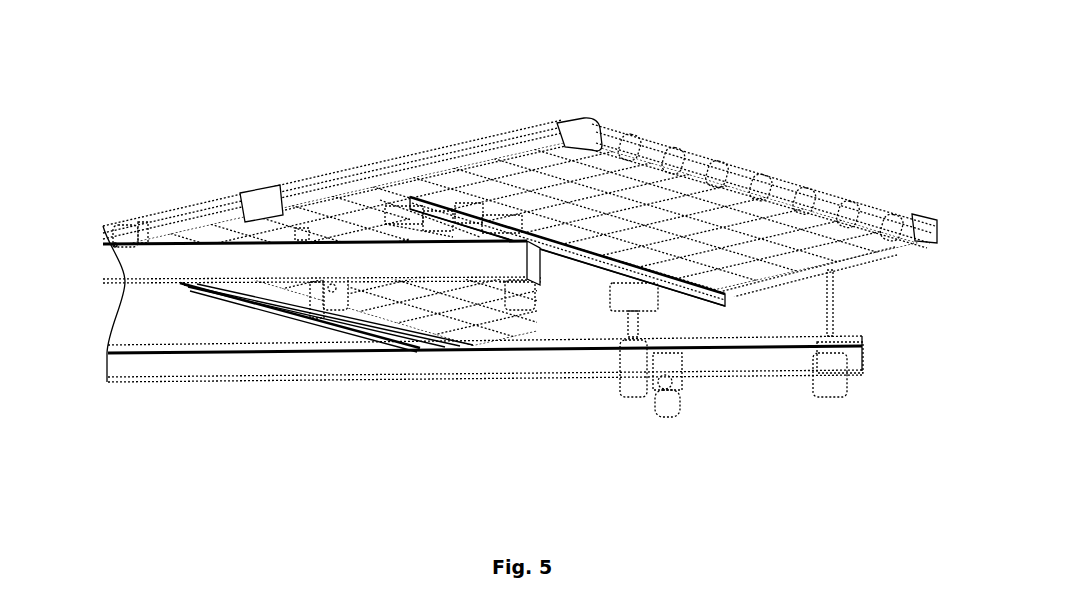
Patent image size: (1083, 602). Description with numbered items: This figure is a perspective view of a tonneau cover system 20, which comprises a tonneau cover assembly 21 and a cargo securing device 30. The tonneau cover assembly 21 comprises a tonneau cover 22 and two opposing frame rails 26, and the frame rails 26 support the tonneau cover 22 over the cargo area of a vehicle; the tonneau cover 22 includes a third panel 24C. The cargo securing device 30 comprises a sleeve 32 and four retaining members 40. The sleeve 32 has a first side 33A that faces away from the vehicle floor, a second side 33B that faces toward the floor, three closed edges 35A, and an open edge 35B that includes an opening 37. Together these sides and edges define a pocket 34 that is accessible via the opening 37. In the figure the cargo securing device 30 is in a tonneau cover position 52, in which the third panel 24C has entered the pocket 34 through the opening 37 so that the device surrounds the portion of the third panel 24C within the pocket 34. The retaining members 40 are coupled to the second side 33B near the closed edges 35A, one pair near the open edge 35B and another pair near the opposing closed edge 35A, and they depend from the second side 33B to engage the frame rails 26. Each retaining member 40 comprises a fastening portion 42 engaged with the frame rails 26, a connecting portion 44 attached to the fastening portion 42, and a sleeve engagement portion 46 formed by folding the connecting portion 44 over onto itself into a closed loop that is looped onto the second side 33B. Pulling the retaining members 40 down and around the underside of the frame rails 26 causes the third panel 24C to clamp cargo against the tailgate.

The tonneau cover system 20 is at (284, 80).
The tonneau cover assembly 21 is at (165, 270).
The tonneau cover 22 is at (122, 209).
The third panel 24C is at (188, 207).
The frame rails 26 is at (285, 370).
The cargo securing device 30 is at (694, 142).
The sleeve 32 is at (534, 205).
The first side 33A is at (598, 123).
The second side 33B is at (758, 258).
The pocket 34 is at (625, 233).
The closed edges 35A is at (400, 175).
The open edge 35B is at (240, 195).
The opening 37 is at (228, 245).
The retaining members 40 is at (315, 326).
The fastening portion 42 is at (293, 300).
The connecting portion 44 is at (308, 232).
The sleeve engagement portion 46 is at (330, 218).
The tonneau cover position 52 is at (792, 141).